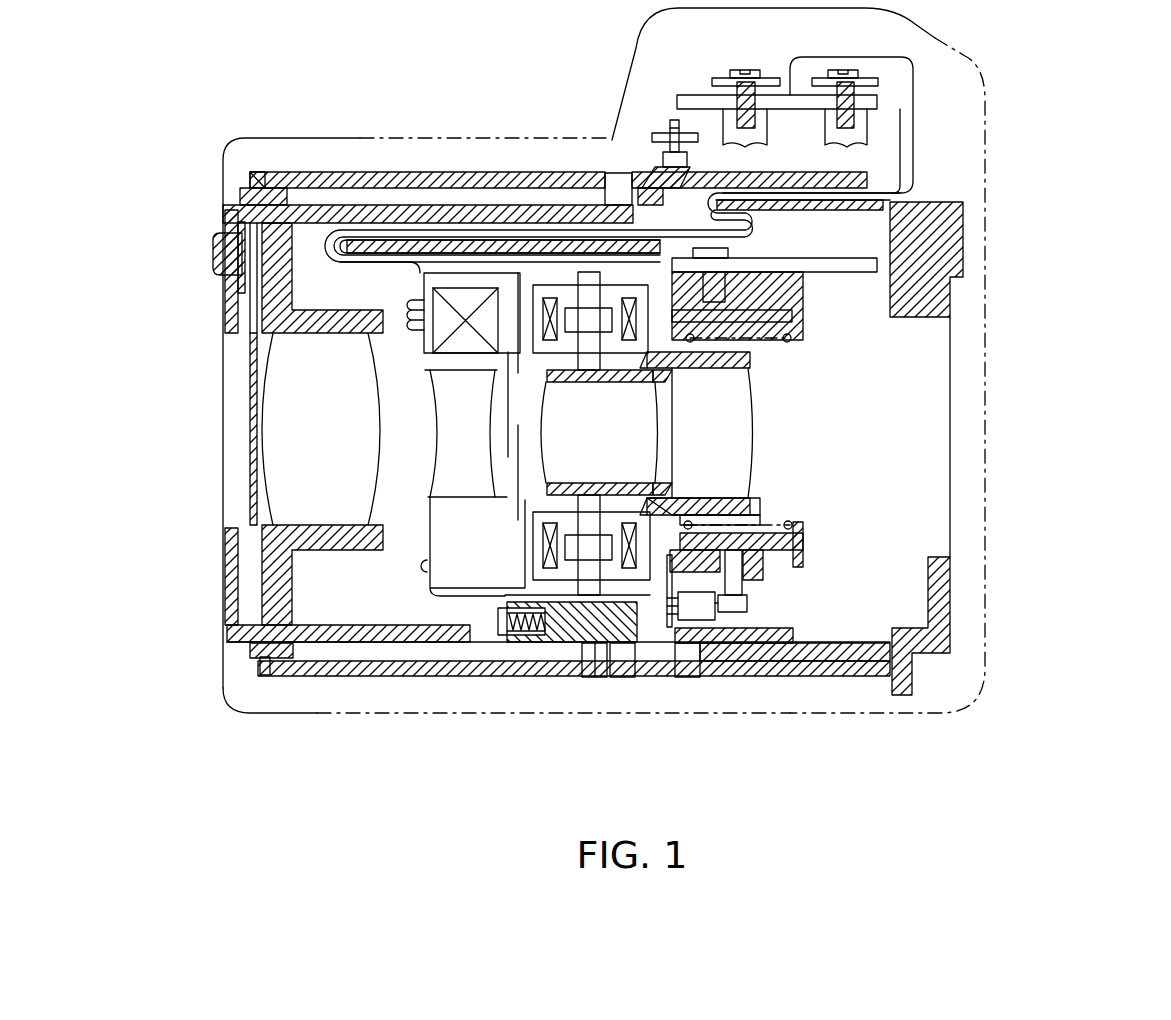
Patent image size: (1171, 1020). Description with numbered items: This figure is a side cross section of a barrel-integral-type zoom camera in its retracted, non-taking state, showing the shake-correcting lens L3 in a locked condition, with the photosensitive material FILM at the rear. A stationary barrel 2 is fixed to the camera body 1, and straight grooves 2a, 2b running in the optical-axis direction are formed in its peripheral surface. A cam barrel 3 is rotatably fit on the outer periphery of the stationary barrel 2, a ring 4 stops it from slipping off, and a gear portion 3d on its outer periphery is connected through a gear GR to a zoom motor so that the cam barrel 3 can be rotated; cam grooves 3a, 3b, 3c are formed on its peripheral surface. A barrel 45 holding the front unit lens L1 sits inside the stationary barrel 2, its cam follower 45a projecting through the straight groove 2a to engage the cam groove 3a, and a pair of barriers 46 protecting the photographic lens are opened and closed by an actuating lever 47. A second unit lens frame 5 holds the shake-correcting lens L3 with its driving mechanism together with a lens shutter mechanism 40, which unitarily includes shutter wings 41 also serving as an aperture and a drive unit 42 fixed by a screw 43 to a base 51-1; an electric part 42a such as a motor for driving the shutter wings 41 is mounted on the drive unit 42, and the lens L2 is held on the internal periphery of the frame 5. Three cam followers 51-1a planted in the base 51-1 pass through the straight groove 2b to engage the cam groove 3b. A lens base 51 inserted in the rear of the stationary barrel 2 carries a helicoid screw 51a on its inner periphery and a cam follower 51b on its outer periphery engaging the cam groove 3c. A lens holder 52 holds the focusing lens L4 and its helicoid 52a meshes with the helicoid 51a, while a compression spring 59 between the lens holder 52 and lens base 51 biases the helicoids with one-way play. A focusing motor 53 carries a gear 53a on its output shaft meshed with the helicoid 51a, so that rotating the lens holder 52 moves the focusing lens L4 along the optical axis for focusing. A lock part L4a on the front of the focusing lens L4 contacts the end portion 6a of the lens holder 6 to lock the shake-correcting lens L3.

The camera body 1 is at (985, 208).
The stationary barrel 2 is at (865, 645).
The straight groove 2a is at (472, 197).
The straight groove 2b is at (333, 652).
The cam barrel 3 is at (283, 652).
The cam groove 3a is at (395, 182).
The cam groove 3b is at (592, 670).
The cam groove 3c is at (660, 675).
The gear portion 3d is at (662, 165).
The ring 4 is at (260, 665).
The second unit lens frame 5 is at (425, 246).
The lens holder 6 is at (595, 488).
The end portion 6a is at (663, 490).
The lens shutter mechanism 40 is at (404, 470).
The shutter wings 41 is at (508, 470).
The drive unit 42 is at (438, 580).
The electric part 42a is at (418, 312).
The screw 43 is at (528, 633).
The barrel 45 is at (285, 578).
The cam follower 45a is at (618, 188).
The barriers 46 is at (250, 440).
The actuating lever 47 is at (213, 252).
The lens base 51 is at (793, 635).
The base 51-1 is at (565, 633).
The cam follower 51-1a is at (625, 676).
The helicoid screw 51a is at (790, 548).
The cam follower 51b is at (688, 672).
The lens holder 52 is at (757, 508).
The helicoid 52a is at (740, 320).
The focusing motor 53 is at (702, 610).
The gear 53a is at (747, 606).
The compression spring 59 is at (787, 345).
The gear GR is at (672, 128).
The front unit lens L1 is at (268, 385).
The lens L2 is at (438, 398).
The shake-correcting lens L3 is at (645, 452).
The focusing lens L4 is at (740, 448).
The lock part L4a is at (660, 368).
The film (photosensitive material) FILM is at (950, 455).